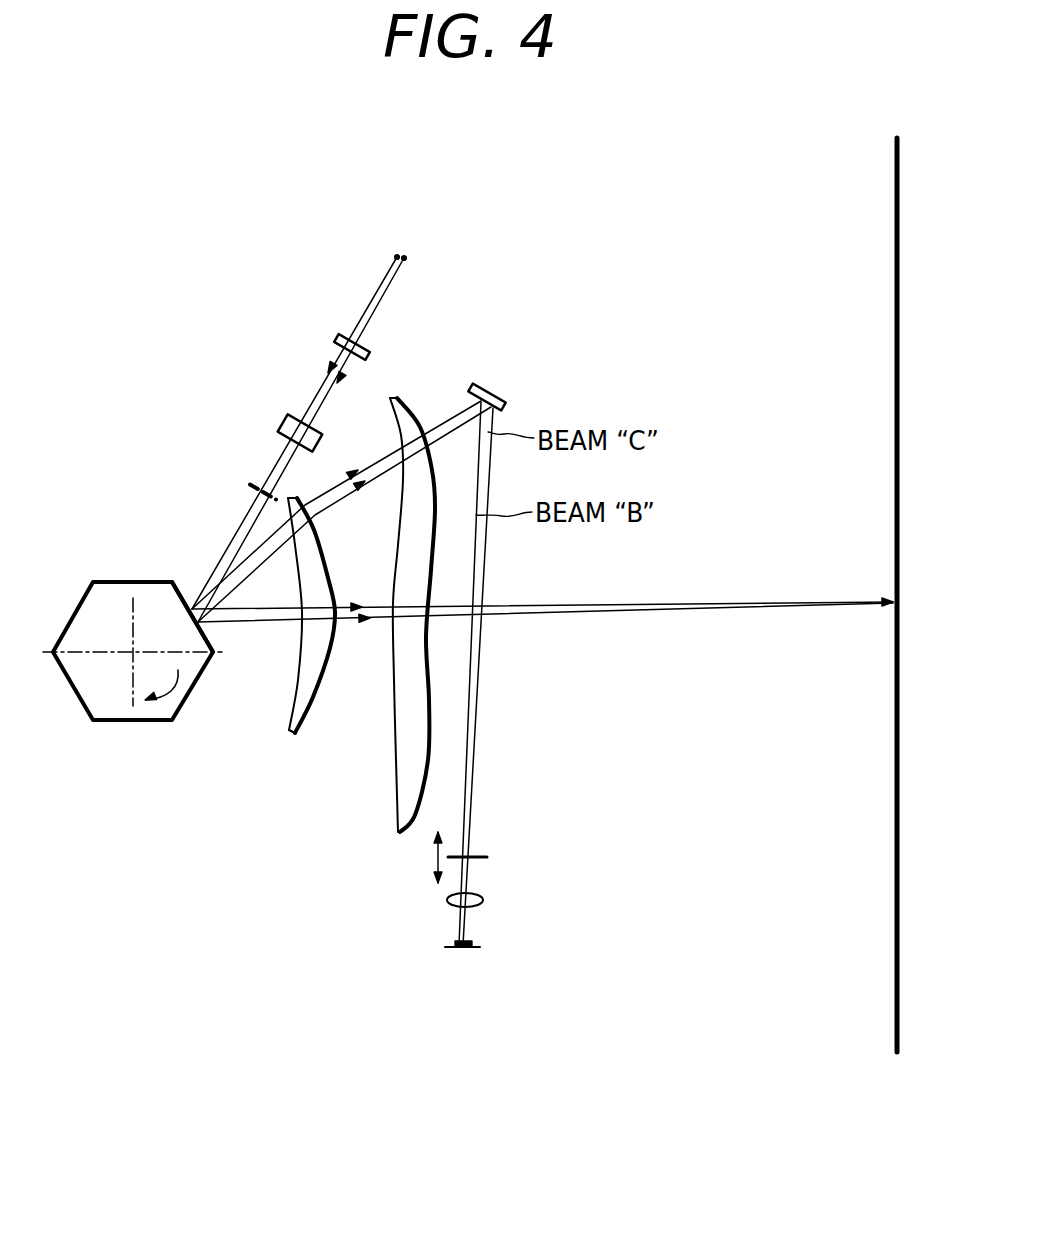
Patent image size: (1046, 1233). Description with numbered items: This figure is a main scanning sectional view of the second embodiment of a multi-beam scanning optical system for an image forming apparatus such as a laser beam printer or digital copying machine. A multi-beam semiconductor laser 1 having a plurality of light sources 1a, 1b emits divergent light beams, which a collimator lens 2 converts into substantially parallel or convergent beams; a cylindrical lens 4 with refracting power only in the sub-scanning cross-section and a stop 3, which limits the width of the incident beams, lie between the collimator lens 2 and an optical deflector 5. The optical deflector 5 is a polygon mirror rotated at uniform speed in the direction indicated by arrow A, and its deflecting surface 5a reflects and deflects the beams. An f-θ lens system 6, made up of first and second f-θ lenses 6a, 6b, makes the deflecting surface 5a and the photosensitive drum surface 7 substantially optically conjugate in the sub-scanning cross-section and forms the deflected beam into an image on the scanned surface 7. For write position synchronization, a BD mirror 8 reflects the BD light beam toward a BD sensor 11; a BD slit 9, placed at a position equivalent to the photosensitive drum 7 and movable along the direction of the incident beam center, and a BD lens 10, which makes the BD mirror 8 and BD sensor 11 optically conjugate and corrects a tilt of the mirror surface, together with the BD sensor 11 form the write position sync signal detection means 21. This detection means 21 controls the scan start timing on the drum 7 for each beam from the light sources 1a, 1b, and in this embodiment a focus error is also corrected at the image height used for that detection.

The multi-beam semiconductor laser 1 is at (390, 204).
The light source 1a is at (397, 257).
The light source 1b is at (404, 258).
The collimator lens 2 is at (341, 342).
The stop 3 is at (254, 486).
The cylindrical lens 4 is at (285, 429).
The optical deflector 5 is at (112, 578).
The deflecting surface 5a is at (185, 588).
The rotation direction A is at (166, 692).
The f-θ lens system 6 is at (344, 633).
The first f-θ lens 6a is at (289, 732).
The second f-θ lens 6b is at (385, 623).
The photosensitive drum surface 7 is at (894, 155).
The BD mirror 8 is at (496, 392).
The BD slit 9 is at (478, 857).
The BD lens 10 is at (484, 900).
The BD sensor 11 is at (493, 960).
The write position sync signal detection means 21 is at (511, 898).